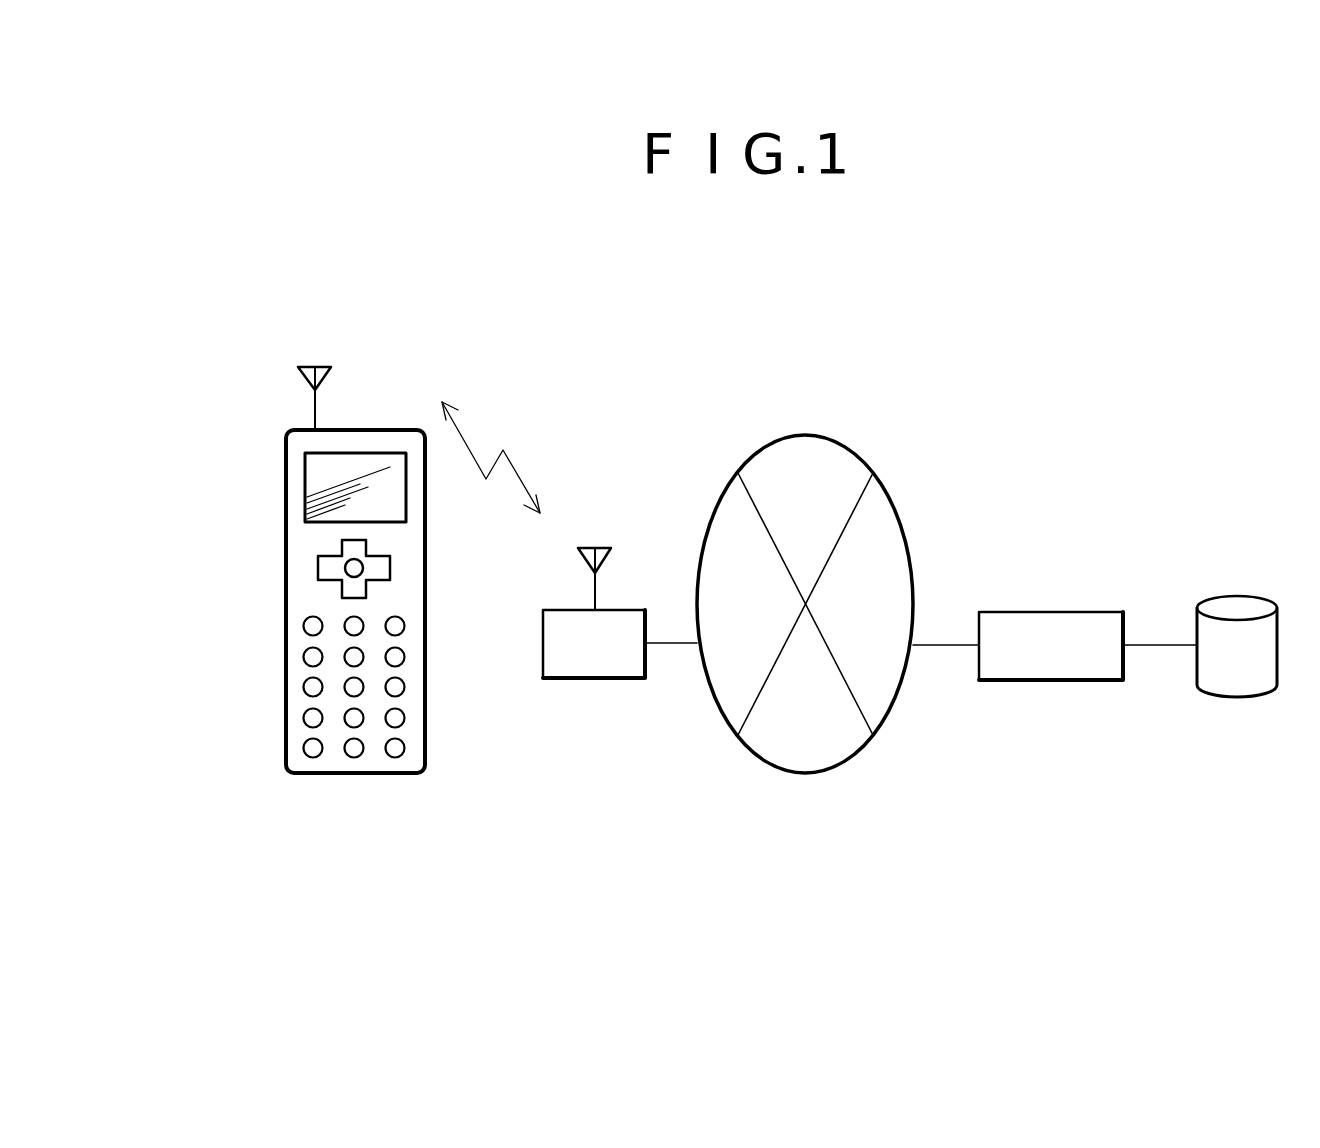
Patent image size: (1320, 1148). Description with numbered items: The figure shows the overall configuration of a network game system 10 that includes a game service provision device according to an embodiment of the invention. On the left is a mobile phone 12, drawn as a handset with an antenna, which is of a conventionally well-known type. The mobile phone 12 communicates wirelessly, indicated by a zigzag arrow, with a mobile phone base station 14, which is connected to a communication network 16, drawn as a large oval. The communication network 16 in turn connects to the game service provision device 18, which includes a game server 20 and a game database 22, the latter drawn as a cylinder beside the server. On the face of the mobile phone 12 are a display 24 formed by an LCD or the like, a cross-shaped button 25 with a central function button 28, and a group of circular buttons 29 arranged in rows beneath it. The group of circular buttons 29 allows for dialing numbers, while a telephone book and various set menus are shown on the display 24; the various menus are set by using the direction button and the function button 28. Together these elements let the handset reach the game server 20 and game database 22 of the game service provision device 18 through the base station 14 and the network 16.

The network game system 10 is at (797, 397).
The mobile phone 12 is at (275, 780).
The mobile phone base station 14 is at (582, 680).
The communication network 16 is at (793, 773).
The game service provision device 18 is at (1100, 795).
The game server 20 is at (1048, 683).
The game database 22 is at (1235, 700).
The display 24 is at (304, 481).
The cursor key 25 is at (318, 569).
The function button 28 is at (390, 568).
The group of circular buttons 29 is at (272, 615).